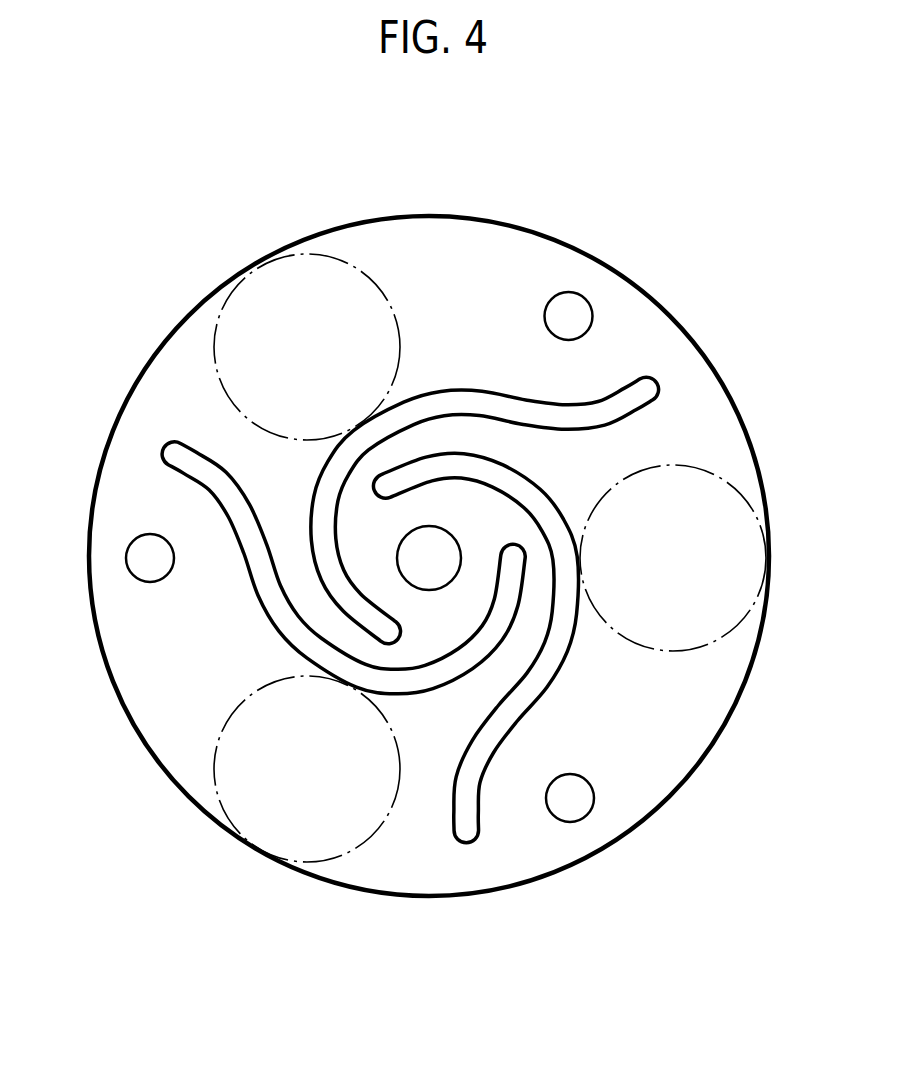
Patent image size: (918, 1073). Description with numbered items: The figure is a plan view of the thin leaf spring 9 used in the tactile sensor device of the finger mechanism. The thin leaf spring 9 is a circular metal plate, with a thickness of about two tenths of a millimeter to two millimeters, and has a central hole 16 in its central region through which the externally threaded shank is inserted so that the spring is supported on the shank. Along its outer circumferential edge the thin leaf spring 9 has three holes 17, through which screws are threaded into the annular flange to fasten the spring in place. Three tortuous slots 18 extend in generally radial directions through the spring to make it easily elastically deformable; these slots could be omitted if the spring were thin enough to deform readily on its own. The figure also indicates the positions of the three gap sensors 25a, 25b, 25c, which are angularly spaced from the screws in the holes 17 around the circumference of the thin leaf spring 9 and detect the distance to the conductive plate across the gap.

The thin leaf spring 9 is at (495, 222).
The central hole 16 is at (447, 545).
The holes 17 is at (577, 313).
The tortuous slots 18 is at (647, 387).
The gap sensor 25a is at (722, 482).
The gap sensor 25b is at (342, 258).
The gap sensor 25c is at (222, 792).